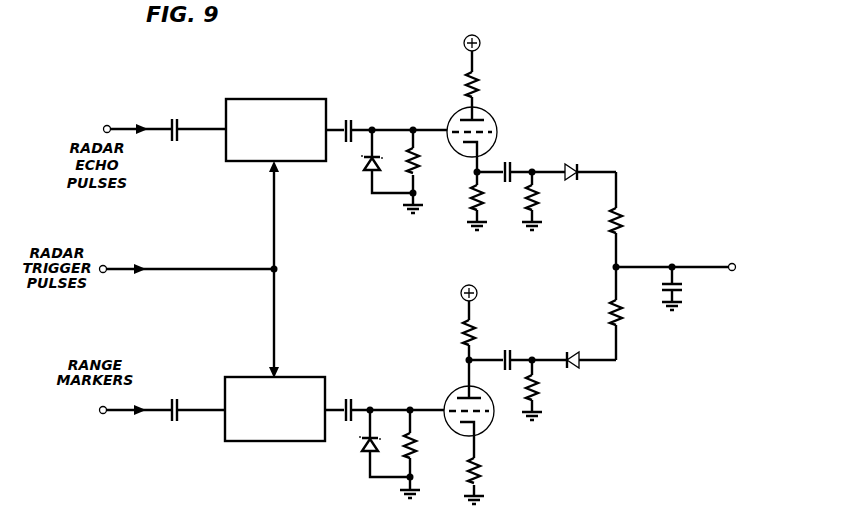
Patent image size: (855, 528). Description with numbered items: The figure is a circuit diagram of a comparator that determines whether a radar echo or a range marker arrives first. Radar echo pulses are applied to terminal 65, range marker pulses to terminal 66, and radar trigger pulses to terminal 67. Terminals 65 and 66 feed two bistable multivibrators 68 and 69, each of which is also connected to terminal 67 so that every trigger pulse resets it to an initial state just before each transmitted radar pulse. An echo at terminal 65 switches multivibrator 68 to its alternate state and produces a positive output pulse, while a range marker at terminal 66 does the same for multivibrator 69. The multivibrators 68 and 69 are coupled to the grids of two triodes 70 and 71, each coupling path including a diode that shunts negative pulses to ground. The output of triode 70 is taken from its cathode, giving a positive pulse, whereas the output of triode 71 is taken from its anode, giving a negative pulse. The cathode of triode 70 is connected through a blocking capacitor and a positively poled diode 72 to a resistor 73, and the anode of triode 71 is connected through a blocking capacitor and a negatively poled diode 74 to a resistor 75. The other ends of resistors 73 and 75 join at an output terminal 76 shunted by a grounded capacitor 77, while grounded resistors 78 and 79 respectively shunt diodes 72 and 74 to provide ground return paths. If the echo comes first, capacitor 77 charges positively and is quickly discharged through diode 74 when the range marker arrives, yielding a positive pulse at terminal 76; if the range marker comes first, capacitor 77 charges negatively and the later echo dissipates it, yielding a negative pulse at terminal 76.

The terminal 65 is at (108, 121).
The terminal 66 is at (106, 415).
The terminal 67 is at (111, 259).
The bistable multivibrator 68 is at (276, 99).
The bistable multivibrator 69 is at (298, 377).
The triode 70 is at (490, 120).
The triode 71 is at (492, 426).
The positively poled diode 72 is at (577, 160).
The resistor 73 is at (628, 215).
The negatively poled diode 74 is at (578, 367).
The resistor 75 is at (607, 317).
The output terminal 76 is at (735, 261).
The grounded capacitor 77 is at (690, 287).
The grounded resistor 78 is at (545, 196).
The grounded resistor 79 is at (540, 397).